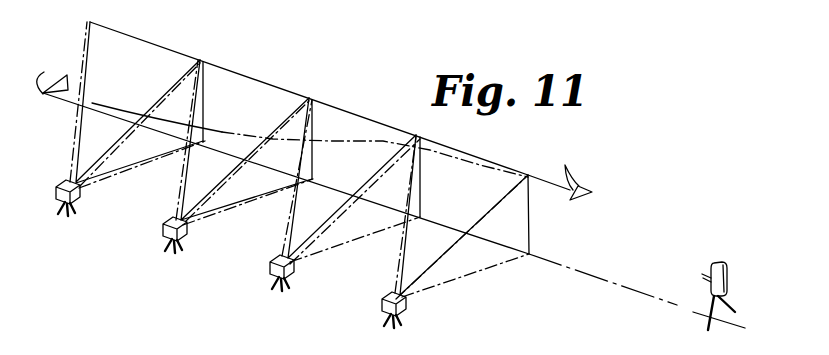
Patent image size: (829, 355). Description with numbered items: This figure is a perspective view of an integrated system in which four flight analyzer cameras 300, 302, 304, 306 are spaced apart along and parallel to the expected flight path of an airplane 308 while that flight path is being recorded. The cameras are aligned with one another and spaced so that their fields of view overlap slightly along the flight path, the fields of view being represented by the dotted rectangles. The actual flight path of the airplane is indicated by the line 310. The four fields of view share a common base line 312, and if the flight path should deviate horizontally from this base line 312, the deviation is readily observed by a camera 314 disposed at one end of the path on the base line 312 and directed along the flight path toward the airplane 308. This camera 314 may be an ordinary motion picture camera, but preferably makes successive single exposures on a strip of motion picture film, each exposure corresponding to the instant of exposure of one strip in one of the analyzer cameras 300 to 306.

The flight analyzer camera 300 is at (57, 191).
The flight analyzer camera 302 is at (164, 226).
The flight analyzer camera 304 is at (271, 264).
The flight analyzer camera 306 is at (383, 302).
The airplane 308 is at (76, 63).
The line indicating actual flight path 310 is at (353, 141).
The common base line 312 is at (565, 266).
The camera 314 is at (745, 264).